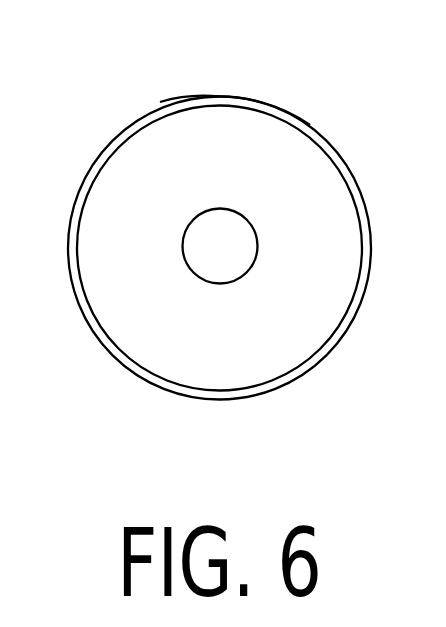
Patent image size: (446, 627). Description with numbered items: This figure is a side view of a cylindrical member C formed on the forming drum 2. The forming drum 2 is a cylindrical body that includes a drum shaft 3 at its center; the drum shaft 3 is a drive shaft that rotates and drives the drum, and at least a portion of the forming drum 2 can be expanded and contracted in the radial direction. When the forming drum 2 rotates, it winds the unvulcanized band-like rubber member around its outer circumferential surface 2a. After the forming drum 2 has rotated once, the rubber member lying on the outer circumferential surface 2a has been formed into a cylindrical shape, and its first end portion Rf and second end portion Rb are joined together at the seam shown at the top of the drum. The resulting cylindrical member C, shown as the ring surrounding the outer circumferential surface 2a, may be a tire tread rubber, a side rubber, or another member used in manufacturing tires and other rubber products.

The forming drum 2 is at (342, 175).
The outer circumferential surface 2a is at (103, 167).
The drum shaft 3 is at (245, 238).
The second end portion Rb is at (189, 98).
The first end portion Rf is at (201, 106).
The cylindrical member C is at (280, 108).